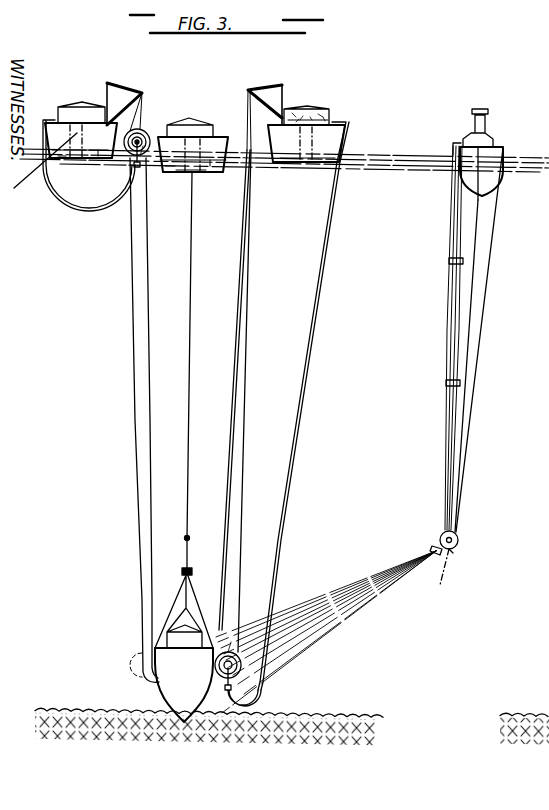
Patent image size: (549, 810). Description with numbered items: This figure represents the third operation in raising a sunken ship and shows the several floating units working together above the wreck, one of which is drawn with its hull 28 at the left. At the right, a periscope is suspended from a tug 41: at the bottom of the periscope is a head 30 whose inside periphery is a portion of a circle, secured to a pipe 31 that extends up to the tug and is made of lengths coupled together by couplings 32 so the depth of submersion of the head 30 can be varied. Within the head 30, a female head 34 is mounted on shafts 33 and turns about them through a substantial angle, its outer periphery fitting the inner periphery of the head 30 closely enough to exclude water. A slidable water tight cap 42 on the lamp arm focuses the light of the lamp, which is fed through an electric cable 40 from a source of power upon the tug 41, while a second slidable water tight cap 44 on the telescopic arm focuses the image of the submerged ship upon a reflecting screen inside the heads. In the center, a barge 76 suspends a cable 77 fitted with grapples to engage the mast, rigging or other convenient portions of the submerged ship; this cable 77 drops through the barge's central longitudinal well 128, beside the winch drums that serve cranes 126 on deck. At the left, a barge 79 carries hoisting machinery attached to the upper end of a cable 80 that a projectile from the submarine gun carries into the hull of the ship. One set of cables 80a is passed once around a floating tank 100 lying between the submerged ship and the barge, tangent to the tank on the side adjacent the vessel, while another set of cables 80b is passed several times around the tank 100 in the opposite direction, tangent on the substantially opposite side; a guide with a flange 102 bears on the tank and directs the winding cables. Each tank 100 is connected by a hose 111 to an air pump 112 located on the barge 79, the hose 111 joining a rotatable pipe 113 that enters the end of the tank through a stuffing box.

The hull of lifting vessel 28 is at (39, 171).
The head 30 is at (459, 538).
The pipe 31 is at (448, 469).
The couplings 32 is at (449, 262).
The shafts 33 is at (465, 527).
The female head 34 is at (454, 546).
The electric cable 40 is at (448, 340).
The tug 41 is at (487, 153).
The water tight cap 42 is at (437, 579).
The water tight cap 44 is at (434, 548).
The barge 76 is at (180, 128).
The cable 77 is at (186, 382).
The barge 79 is at (78, 120).
The cable 80 is at (148, 308).
The cables 80a is at (148, 365).
The cables 80b is at (137, 456).
The tank 100 is at (140, 126).
The flange 102 is at (139, 132).
The hose 111 is at (318, 311).
The air pump 112 is at (300, 122).
The pipe 113 is at (135, 162).
The cranes 126 is at (128, 90).
The well 128 is at (192, 170).